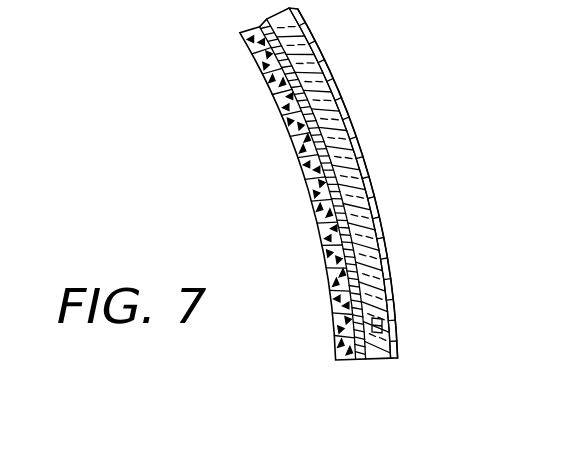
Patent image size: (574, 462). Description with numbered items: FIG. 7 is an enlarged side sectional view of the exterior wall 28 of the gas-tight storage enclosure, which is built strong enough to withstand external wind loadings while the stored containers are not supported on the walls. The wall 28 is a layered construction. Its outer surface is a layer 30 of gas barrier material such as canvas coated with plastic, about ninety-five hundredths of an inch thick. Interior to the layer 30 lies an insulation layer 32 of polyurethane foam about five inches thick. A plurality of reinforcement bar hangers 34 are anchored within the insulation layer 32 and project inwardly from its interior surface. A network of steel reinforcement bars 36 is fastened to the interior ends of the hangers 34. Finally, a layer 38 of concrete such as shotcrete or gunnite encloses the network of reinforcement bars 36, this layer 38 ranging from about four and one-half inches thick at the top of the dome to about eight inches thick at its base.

The wall 28 is at (398, 367).
The layer of gas barrier material 30 is at (386, 257).
The insulation layer 32 is at (350, 172).
The reinforcement bar hangers 34 is at (383, 329).
The network of steel reinforcement bars 36 is at (340, 210).
The layer of concrete 38 is at (307, 182).